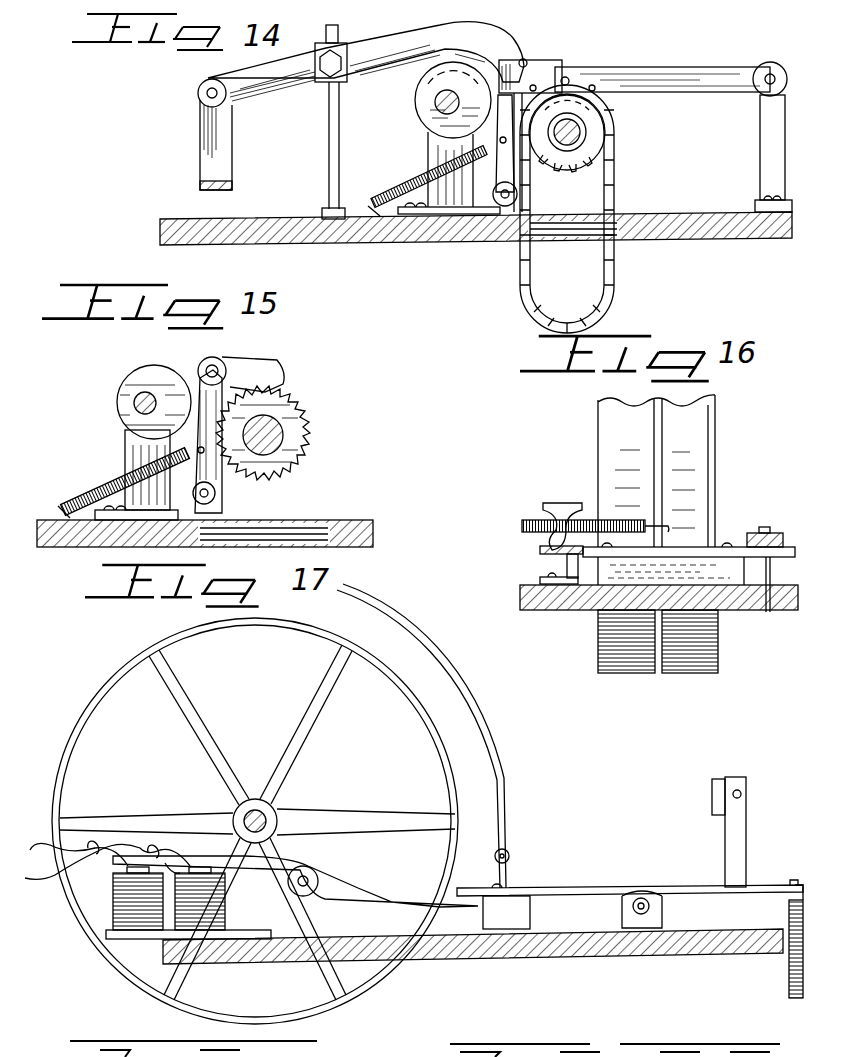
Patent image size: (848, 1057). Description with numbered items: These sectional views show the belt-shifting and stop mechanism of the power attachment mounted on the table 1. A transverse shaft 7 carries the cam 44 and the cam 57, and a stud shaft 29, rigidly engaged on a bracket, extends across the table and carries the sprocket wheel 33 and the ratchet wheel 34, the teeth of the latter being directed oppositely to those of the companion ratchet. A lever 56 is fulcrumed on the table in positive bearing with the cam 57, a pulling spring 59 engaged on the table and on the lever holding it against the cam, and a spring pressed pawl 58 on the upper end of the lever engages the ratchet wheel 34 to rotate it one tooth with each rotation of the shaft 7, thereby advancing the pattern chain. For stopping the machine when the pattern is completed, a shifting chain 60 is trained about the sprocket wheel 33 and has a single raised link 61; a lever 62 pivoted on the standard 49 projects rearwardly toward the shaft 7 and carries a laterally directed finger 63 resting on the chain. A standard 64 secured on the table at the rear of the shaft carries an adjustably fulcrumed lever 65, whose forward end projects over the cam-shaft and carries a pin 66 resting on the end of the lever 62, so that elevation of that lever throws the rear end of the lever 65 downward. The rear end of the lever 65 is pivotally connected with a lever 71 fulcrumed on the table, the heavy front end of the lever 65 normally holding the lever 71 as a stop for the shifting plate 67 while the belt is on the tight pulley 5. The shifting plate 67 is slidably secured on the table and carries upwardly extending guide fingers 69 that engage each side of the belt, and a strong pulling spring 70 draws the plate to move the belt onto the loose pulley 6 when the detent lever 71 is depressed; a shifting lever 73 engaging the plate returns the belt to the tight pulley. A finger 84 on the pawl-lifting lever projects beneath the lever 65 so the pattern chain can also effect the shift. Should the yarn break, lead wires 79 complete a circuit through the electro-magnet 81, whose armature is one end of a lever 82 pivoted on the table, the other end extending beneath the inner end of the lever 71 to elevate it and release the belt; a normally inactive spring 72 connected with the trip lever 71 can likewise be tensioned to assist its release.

In FIG. 15, the table 1 is at (92, 538).
In FIG. 16, the table 1 is at (596, 597).
In FIG. 17, the table 1 is at (318, 966).
In FIG. 16, the tight pulley 5 is at (690, 437).
In FIG. 16, the loose pulley 6 is at (616, 442).
In FIG. 14, the shaft 7 is at (443, 112).
In FIG. 15, the shaft 7 is at (134, 400).
In FIG. 14, the stud shaft 29 is at (584, 135).
In FIG. 15, the stud shaft 29 is at (287, 443).
In FIG. 14, the sprocket wheel 33 is at (605, 151).
In FIG. 15, the ratchet wheel 34 is at (305, 430).
In FIG. 14, the cam 44 is at (433, 90).
In FIG. 14, the standard 49 is at (772, 158).
In FIG. 14, the lever 56 is at (497, 165).
In FIG. 15, the lever 56 is at (197, 382).
In FIG. 15, the cam 57 is at (162, 382).
In FIG. 15, the spring pressed pawl 58 is at (239, 378).
In FIG. 14, the pulling spring 59 is at (383, 212).
In FIG. 15, the pulling spring 59 is at (105, 490).
In FIG. 14, the shifting chain 60 is at (527, 285).
In FIG. 14, the raised link 61 is at (522, 224).
In FIG. 14, the lever 62 is at (692, 73).
In FIG. 14, the finger 63 is at (597, 86).
In FIG. 14, the standard 64 is at (329, 153).
In FIG. 14, the lever 65 is at (372, 50).
In FIG. 17, the lever 65 is at (714, 802).
In FIG. 14, the pin 66 is at (525, 60).
In FIG. 16, the shifting plate 67 is at (769, 598).
In FIG. 16, the guide fingers 69 is at (660, 472).
In FIG. 17, the guide fingers 69 is at (506, 823).
In FIG. 16, the pulling spring 70 is at (530, 522).
In FIG. 17, the pulling spring 70 is at (508, 853).
In FIG. 14, the lever 71 is at (212, 188).
In FIG. 16, the lever 71 is at (553, 553).
In FIG. 17, the lever 71 is at (598, 888).
In FIG. 17, the spring 72 is at (788, 972).
In FIG. 16, the shifting lever 73 is at (756, 533).
In FIG. 17, the lead wires 79 is at (85, 852).
In FIG. 17, the electro-magnet 81 is at (128, 915).
In FIG. 16, the lever 82 is at (552, 502).
In FIG. 17, the lever 82 is at (362, 891).
In FIG. 14, the finger 84 is at (566, 78).